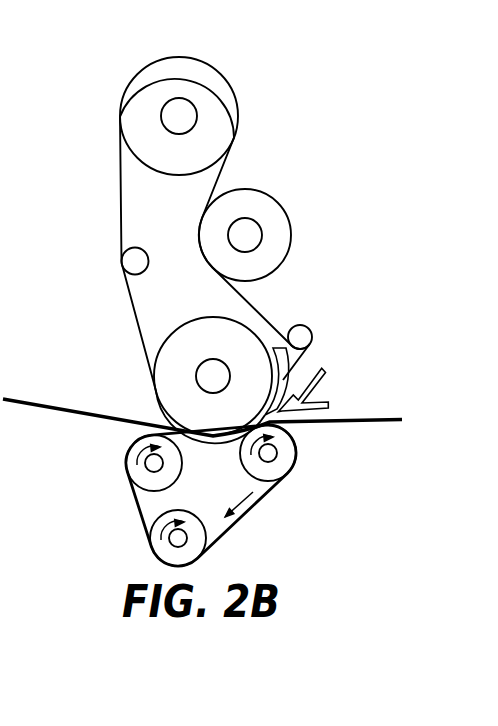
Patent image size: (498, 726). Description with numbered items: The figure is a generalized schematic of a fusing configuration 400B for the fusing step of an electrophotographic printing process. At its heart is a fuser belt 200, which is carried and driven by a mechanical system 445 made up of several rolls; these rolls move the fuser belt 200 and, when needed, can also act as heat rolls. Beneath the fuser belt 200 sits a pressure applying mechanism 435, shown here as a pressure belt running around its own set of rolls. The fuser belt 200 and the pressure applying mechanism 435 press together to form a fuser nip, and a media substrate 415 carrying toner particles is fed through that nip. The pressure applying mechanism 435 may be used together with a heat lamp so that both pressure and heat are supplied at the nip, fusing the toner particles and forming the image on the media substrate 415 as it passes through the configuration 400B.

The fusing configuration 400B is at (297, 67).
The mechanical system 445 is at (243, 152).
The fuser belt 200 is at (137, 333).
The media substrate 415 is at (167, 423).
The pressure applying mechanism 435 is at (118, 458).